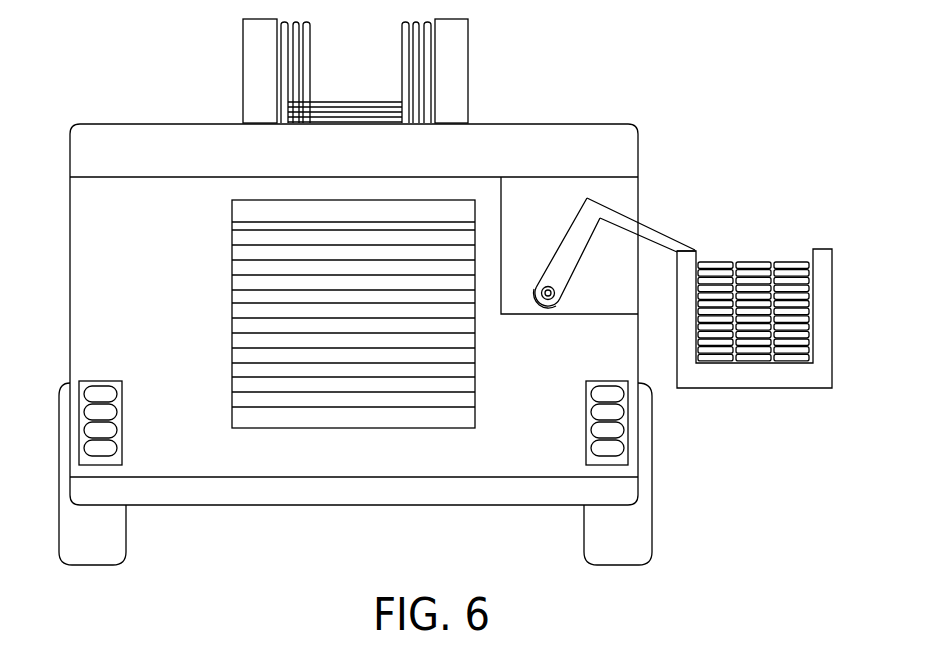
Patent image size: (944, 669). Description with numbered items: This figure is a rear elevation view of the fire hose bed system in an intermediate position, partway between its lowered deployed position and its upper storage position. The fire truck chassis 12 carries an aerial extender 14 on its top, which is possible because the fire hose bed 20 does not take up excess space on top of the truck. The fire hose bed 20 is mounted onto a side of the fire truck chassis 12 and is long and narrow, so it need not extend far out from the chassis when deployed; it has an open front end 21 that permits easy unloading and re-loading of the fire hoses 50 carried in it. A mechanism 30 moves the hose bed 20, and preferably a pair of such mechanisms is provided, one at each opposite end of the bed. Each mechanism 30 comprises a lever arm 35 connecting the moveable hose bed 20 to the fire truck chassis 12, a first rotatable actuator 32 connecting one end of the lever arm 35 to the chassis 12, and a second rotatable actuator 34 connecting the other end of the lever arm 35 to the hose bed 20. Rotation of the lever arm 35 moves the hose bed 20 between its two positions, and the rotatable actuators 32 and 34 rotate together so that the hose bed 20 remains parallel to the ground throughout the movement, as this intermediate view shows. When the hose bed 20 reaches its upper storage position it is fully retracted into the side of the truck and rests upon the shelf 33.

The fire truck chassis 12 is at (92, 266).
The aerial extender 14 is at (243, 78).
The fire hose bed 20 is at (832, 284).
The open front end 21 is at (783, 289).
The mechanism 30 is at (553, 247).
The first rotatable actuator 32 is at (566, 297).
The shelf 33 is at (512, 306).
The second rotatable actuator 34 is at (697, 247).
The lever arm 35 is at (652, 227).
The fire hoses 50 is at (802, 320).